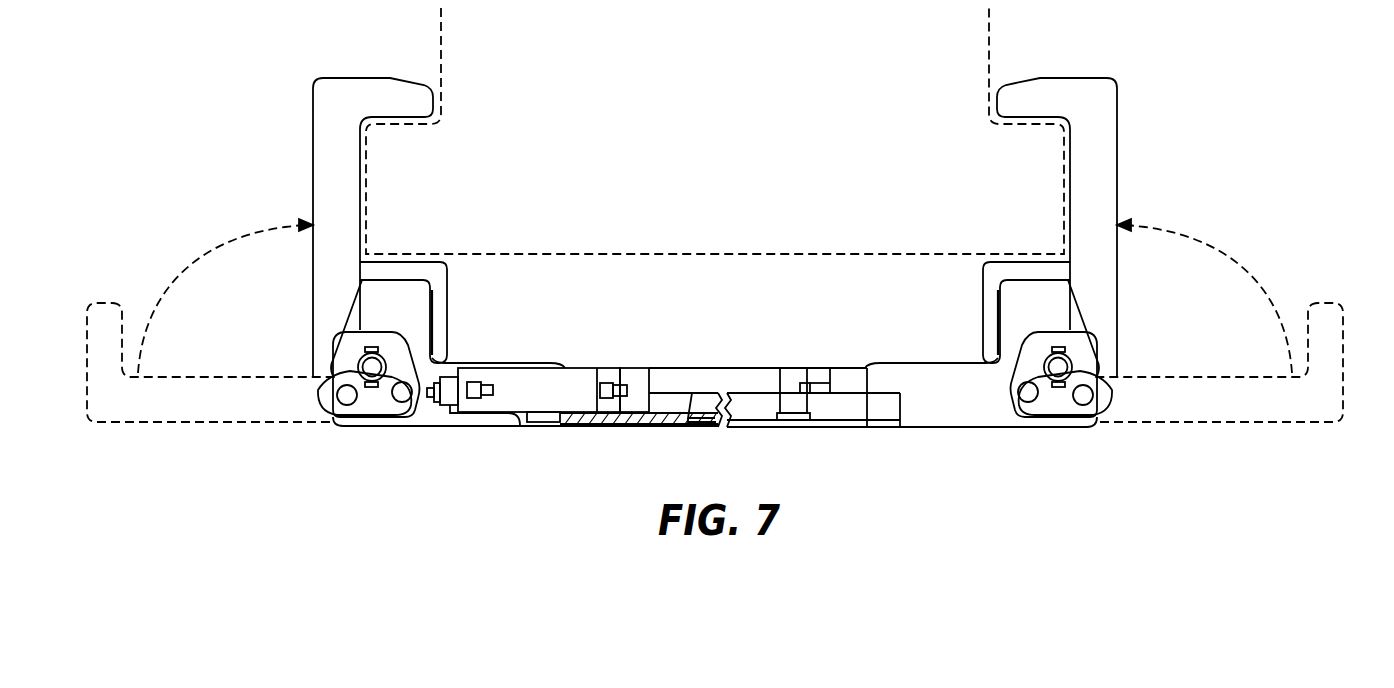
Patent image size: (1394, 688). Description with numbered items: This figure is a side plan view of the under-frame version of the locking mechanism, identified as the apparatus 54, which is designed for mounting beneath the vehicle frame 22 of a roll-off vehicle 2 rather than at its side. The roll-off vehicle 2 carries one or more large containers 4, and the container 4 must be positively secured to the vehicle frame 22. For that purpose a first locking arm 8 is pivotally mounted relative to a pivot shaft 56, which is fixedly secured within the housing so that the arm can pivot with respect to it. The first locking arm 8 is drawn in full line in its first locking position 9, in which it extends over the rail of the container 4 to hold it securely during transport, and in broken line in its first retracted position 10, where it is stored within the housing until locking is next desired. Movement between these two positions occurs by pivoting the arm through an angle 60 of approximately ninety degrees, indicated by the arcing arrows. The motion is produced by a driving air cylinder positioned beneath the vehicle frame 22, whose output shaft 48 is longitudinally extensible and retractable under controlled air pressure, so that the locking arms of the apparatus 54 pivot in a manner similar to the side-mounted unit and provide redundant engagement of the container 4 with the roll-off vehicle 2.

The roll-off vehicle 2 is at (447, 288).
The container 4 is at (442, 62).
The first locking arm 8 is at (195, 383).
The first locking position 9 is at (228, 418).
The first retracted position 10 is at (320, 103).
The vehicle frame 22 is at (447, 322).
The output shaft 48 is at (447, 397).
The under-frame mounting apparatus 54 is at (492, 430).
The pivot shaft 56 is at (362, 368).
The angle 60 is at (243, 232).